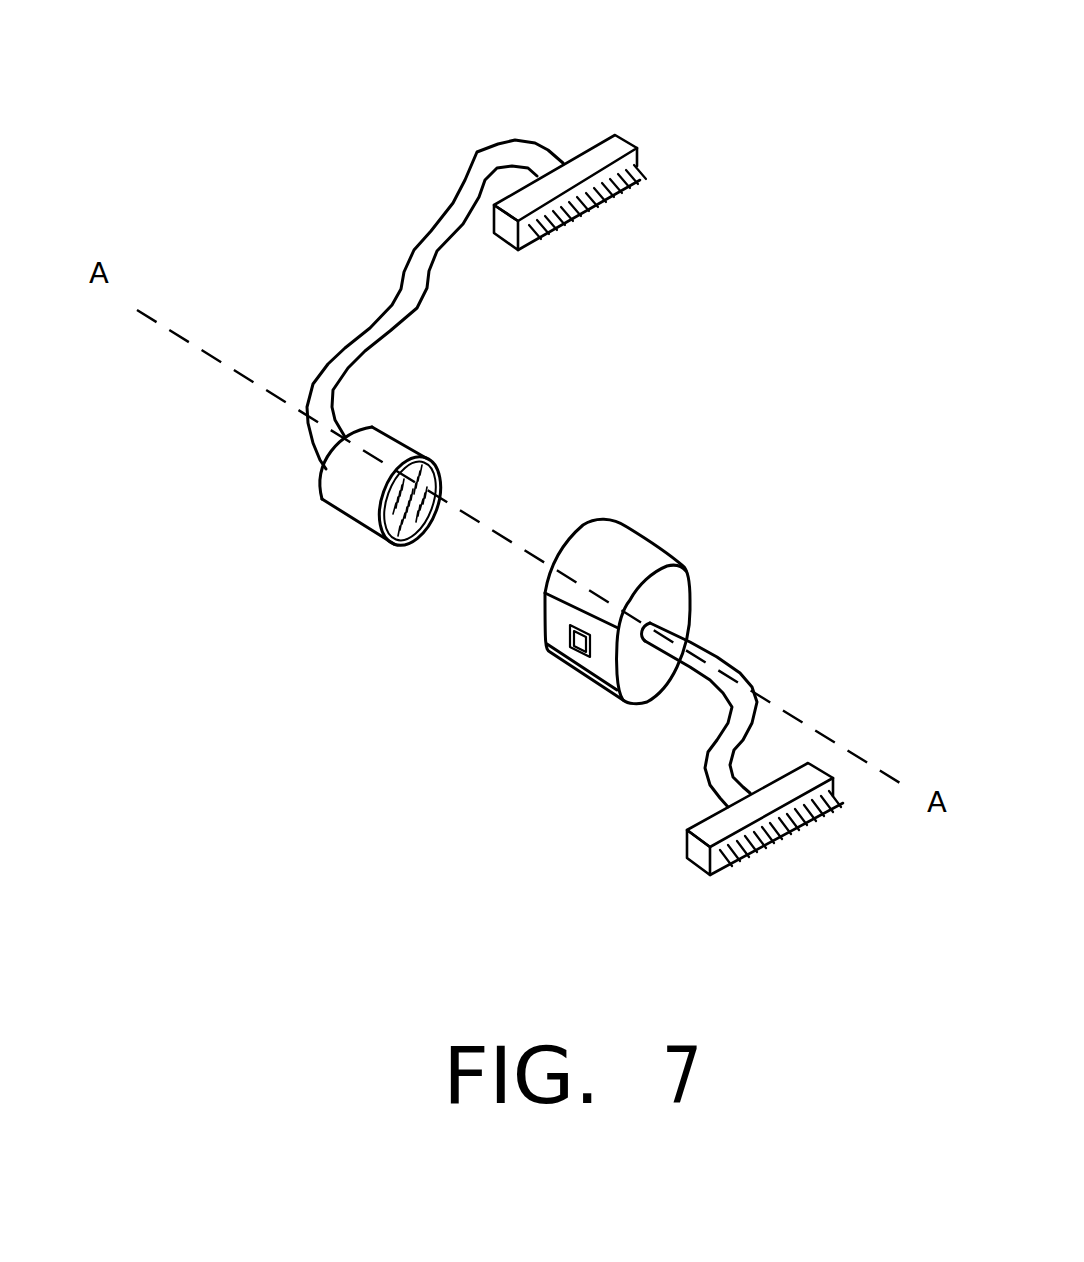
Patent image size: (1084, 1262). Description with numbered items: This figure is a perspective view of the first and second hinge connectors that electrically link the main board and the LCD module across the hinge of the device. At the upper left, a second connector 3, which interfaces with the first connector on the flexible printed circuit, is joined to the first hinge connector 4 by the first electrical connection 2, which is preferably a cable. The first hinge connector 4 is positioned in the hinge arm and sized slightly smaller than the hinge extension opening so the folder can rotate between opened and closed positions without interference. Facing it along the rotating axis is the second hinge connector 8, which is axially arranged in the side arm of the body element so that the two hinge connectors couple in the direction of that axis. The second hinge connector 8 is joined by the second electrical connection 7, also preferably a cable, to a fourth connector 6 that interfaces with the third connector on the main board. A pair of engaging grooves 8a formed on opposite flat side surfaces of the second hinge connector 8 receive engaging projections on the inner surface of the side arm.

The first electrical connection 2 is at (480, 174).
The second connector 3 is at (618, 152).
The first hinge connector 4 is at (338, 545).
The fourth connector 6 is at (812, 778).
The second electrical connection 7 is at (738, 678).
The second hinge connector 8 is at (566, 674).
The engaging grooves 8a is at (572, 636).